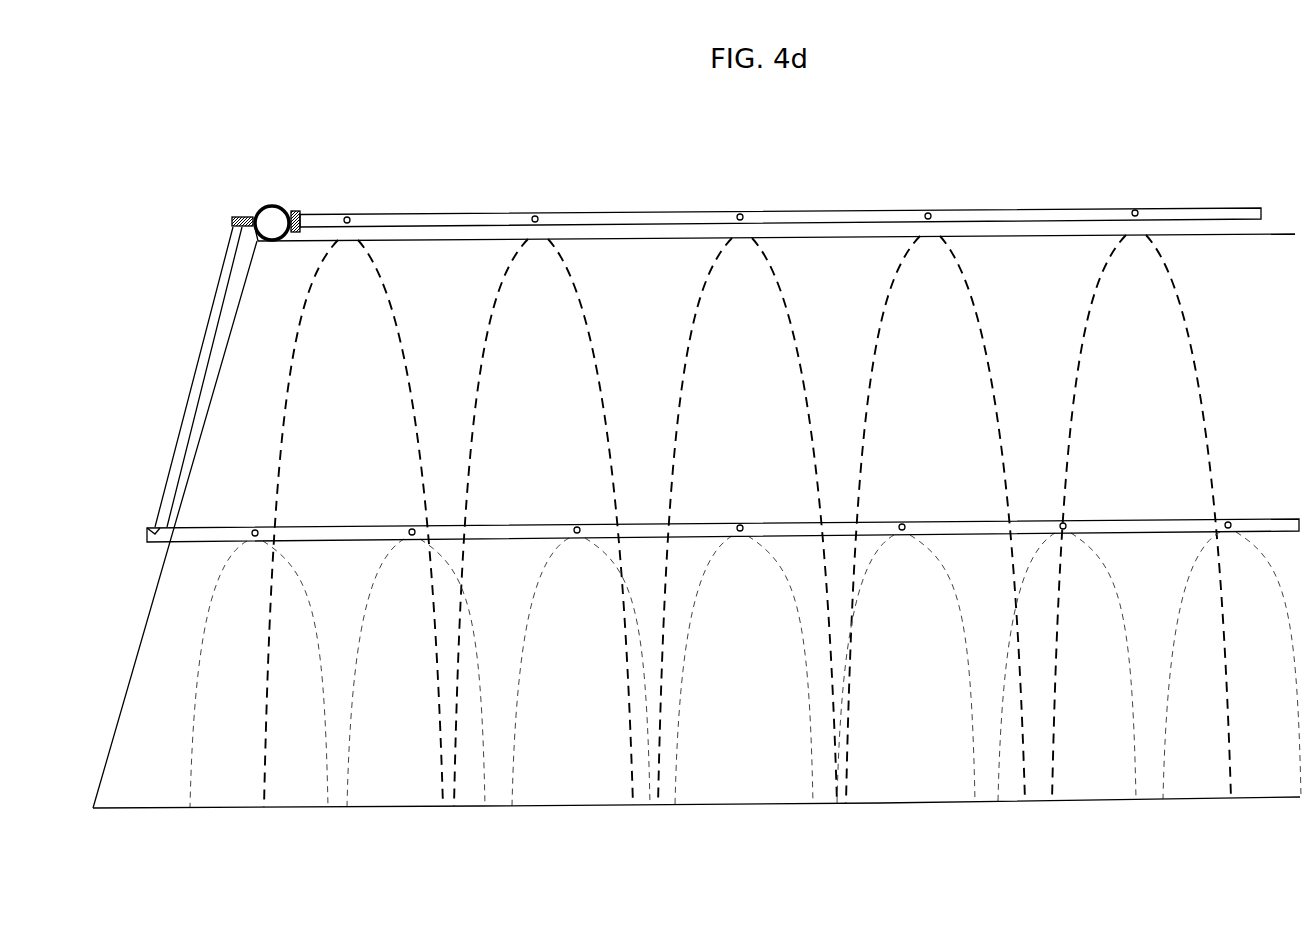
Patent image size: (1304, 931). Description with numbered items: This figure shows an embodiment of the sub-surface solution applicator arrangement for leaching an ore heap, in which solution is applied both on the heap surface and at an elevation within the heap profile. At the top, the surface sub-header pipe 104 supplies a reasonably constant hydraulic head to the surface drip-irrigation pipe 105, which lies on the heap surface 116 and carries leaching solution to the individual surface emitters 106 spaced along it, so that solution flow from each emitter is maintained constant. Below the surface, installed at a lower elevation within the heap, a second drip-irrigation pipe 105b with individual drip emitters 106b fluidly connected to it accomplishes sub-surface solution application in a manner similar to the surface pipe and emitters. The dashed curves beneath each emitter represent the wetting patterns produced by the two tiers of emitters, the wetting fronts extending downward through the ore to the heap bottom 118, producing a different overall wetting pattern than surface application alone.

The surface sub-header pipe 104 is at (286, 198).
The surface drip-irrigation pipe 105 is at (818, 208).
The surface emitters 106 is at (938, 218).
The heap surface 116 is at (1199, 233).
The drip-irrigation pipe 105b is at (540, 526).
The drip emitters 106b is at (910, 526).
The heap bottom 118 is at (1193, 796).